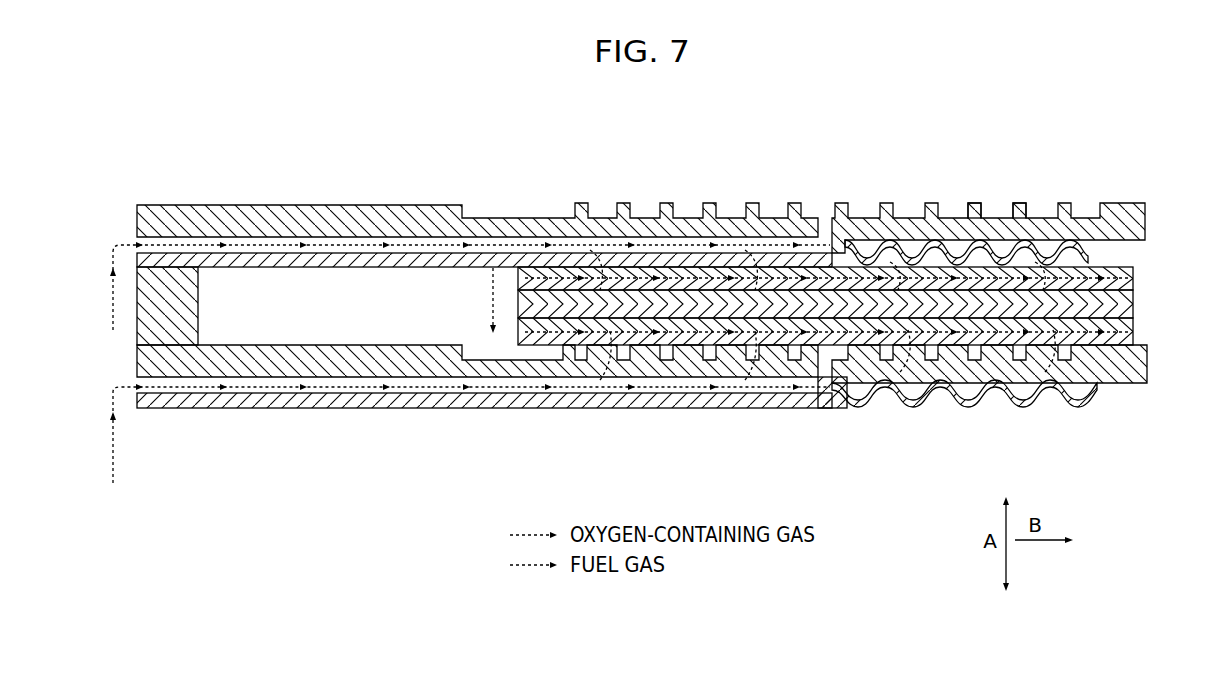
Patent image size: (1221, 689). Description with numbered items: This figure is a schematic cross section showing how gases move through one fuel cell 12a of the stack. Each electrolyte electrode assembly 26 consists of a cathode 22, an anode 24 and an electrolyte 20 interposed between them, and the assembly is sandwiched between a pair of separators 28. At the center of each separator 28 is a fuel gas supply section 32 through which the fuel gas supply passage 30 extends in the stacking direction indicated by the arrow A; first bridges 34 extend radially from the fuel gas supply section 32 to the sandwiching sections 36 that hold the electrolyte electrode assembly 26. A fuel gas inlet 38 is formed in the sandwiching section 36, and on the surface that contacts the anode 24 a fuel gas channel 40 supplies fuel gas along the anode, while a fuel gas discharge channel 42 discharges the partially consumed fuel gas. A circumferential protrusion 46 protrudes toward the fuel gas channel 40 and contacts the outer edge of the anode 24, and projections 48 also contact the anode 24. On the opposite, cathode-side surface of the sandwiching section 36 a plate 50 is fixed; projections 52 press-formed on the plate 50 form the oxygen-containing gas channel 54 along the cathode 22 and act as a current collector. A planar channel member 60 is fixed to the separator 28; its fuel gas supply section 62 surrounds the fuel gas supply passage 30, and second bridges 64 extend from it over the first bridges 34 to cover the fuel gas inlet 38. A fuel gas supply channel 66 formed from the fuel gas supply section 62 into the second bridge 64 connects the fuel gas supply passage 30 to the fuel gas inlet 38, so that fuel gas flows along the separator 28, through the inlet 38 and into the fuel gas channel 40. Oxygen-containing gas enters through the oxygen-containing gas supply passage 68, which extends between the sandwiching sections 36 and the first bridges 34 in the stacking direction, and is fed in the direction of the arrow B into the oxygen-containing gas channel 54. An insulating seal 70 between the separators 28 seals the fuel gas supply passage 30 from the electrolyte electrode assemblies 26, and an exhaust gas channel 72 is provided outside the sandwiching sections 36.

The fuel cell 12a is at (541, 136).
The electrolyte 20 is at (606, 318).
The cathode 22 is at (626, 290).
The anode 24 is at (588, 345).
The electrolyte electrode assembly 26 is at (825, 367).
The separator 28 is at (1130, 204).
The fuel gas supply passage 30 is at (113, 368).
The fuel gas supply section 32 is at (150, 212).
The first bridge 34 is at (352, 375).
The sandwiching section 36 is at (860, 203).
The fuel gas inlet 38 is at (823, 233).
The fuel gas channel 40 is at (947, 394).
The fuel gas discharge channel 42 is at (520, 378).
The circumferential protrusion 46 is at (1137, 332).
The projections 48 is at (1017, 203).
The plate 50 is at (909, 408).
The projections 52 is at (1060, 238).
The oxygen-containing gas channel 54 is at (948, 240).
The channel member 60 is at (483, 412).
The fuel gas supply section 62 is at (167, 408).
The second bridge 64 is at (395, 408).
The fuel gas supply channel 66 is at (590, 252).
The oxygen-containing gas supply passage 68 is at (490, 297).
The insulating seal 70 is at (190, 315).
The exhaust gas channel 72 is at (1137, 302).